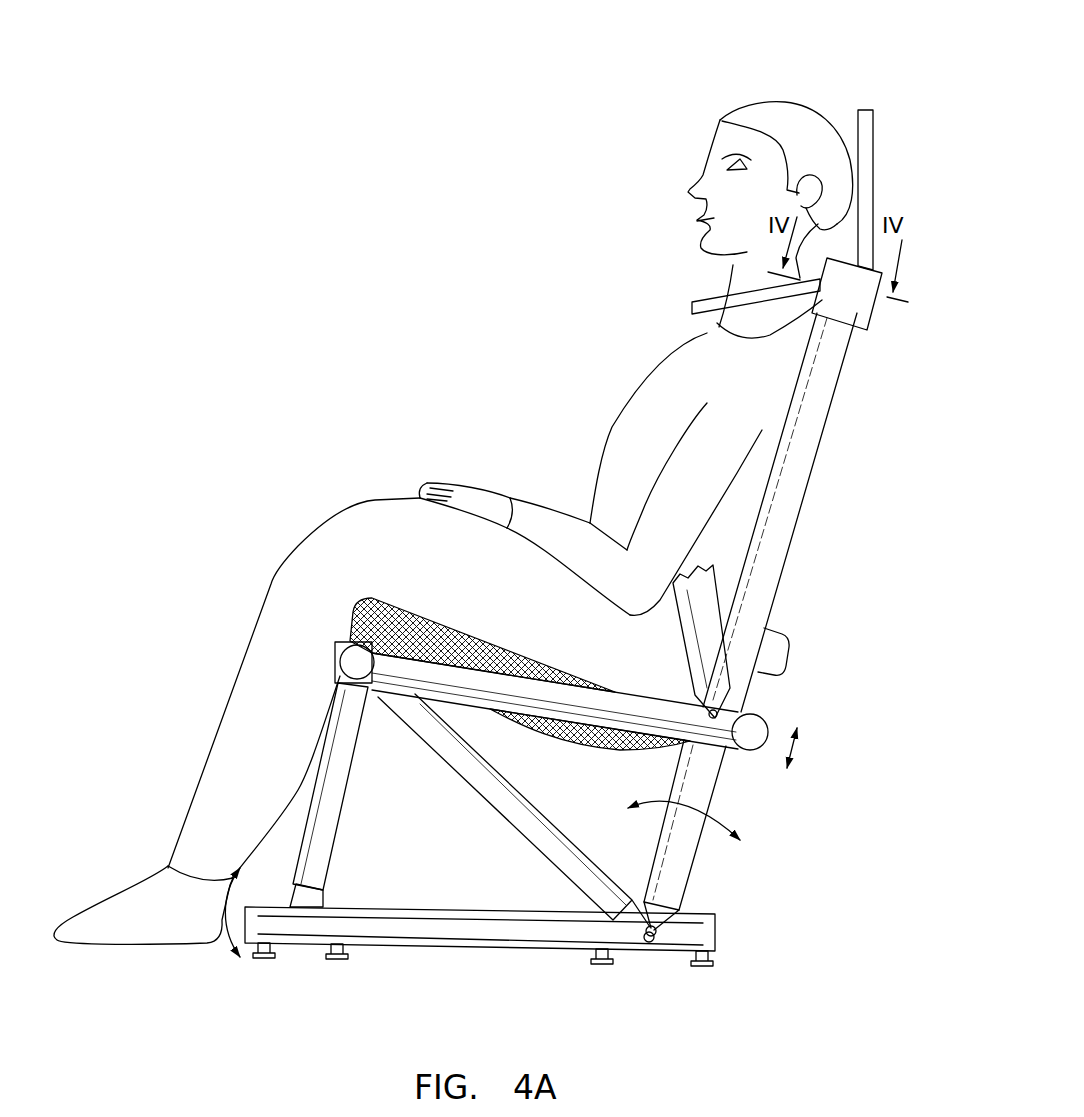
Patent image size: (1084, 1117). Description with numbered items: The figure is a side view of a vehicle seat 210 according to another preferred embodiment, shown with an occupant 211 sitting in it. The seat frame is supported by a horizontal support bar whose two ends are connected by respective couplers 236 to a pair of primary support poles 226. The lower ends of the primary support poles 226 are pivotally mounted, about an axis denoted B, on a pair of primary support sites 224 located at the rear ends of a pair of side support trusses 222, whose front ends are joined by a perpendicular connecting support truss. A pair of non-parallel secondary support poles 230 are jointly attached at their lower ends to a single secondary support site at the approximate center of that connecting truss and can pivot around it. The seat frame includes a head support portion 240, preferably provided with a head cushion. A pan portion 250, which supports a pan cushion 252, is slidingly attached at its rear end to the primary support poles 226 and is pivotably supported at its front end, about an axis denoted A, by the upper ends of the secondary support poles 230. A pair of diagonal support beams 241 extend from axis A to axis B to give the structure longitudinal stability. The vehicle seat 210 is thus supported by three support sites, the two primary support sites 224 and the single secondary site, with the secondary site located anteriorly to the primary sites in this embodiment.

The vehicle seat 210 is at (778, 704).
The occupant 211 is at (690, 362).
The side support trusses 222 is at (483, 937).
The primary support sites 224 is at (653, 943).
The primary support poles 226 is at (790, 500).
The secondary support poles 230 is at (323, 827).
The couplers 236 is at (857, 316).
The head support portion 240 is at (861, 101).
The diagonal support beams 241 is at (547, 827).
The pan portion 250 is at (712, 733).
The pan cushion 252 is at (385, 607).
The axis A is at (352, 660).
The axis B is at (677, 910).